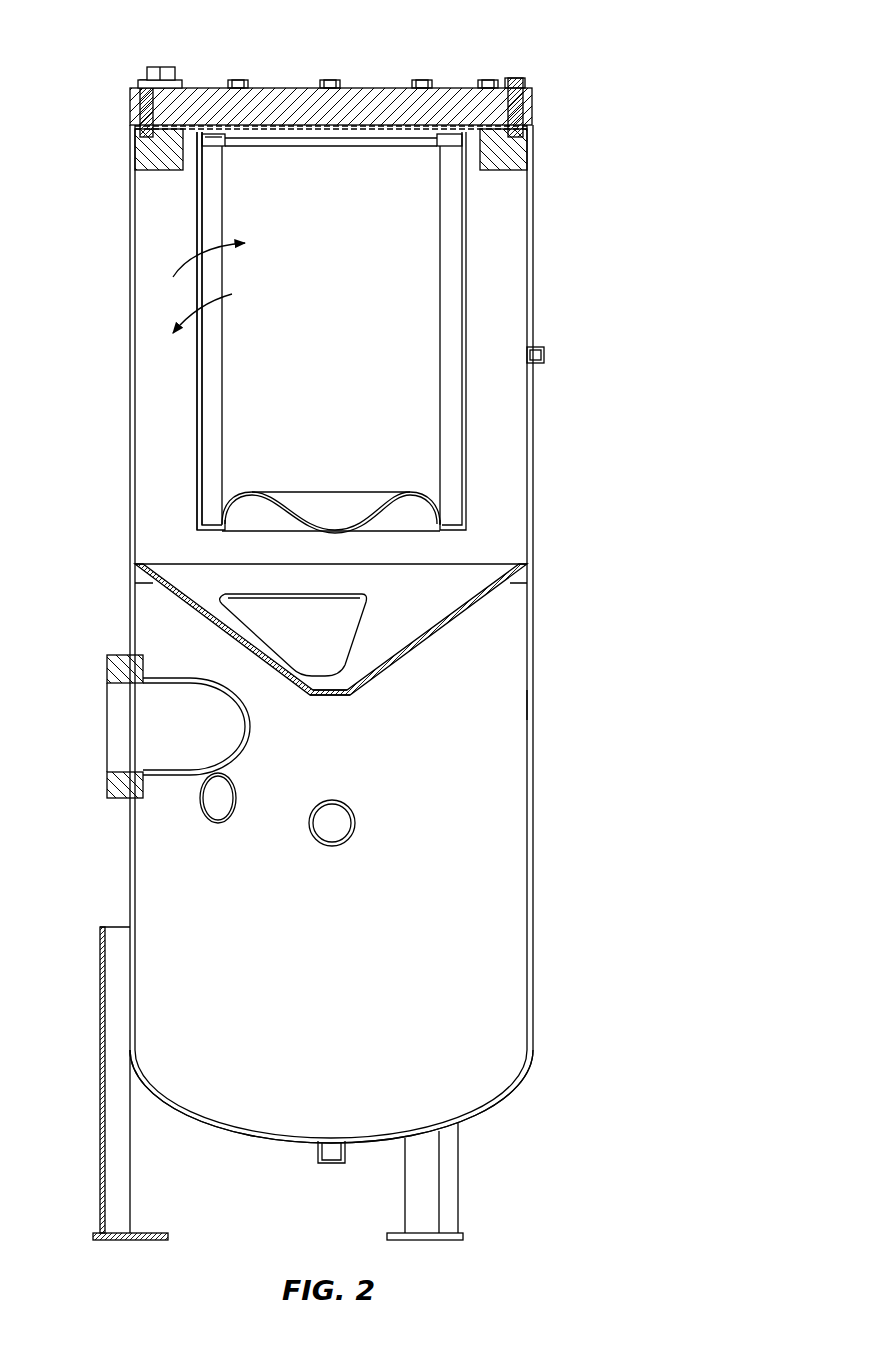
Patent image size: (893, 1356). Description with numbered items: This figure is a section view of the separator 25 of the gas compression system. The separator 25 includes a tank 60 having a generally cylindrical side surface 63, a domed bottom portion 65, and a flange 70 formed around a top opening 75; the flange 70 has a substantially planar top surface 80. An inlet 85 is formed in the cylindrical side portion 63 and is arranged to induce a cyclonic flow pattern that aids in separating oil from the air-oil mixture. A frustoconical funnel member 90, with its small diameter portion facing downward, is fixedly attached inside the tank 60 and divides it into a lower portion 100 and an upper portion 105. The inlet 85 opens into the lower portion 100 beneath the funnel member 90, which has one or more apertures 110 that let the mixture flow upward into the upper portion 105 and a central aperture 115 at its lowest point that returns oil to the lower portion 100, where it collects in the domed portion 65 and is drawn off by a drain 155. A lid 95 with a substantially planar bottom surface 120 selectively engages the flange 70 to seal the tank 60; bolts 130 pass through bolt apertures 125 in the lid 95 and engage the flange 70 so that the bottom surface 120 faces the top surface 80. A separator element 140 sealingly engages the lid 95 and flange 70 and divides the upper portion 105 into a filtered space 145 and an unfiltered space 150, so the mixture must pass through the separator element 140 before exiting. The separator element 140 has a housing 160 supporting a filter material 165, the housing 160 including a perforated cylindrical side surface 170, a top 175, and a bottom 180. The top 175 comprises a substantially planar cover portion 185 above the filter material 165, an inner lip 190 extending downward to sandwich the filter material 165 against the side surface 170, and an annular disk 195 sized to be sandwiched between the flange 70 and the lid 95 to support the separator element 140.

The separator 25 is at (603, 55).
The tank 60 is at (532, 800).
The side surface 63 is at (528, 705).
The domed bottom portion 65 is at (498, 1100).
The flange 70 is at (157, 155).
The top opening 75 is at (210, 128).
The top surface 80 is at (498, 118).
The inlet 85 is at (137, 767).
The funnel member 90 is at (467, 580).
The lid 95 is at (363, 105).
The lower portion 100 is at (212, 918).
The upper portion 105 is at (165, 430).
The apertures 110 is at (340, 628).
The central aperture 115 is at (347, 693).
The bottom surface 120 is at (362, 128).
The bolt apertures 125 is at (140, 105).
The bolts 130 is at (238, 76).
The separator element 140 is at (470, 291).
The filtered space 145 is at (196, 262).
The unfiltered space 150 is at (243, 292).
The drain 155 is at (322, 1152).
The housing 160 is at (455, 538).
The filter material 165 is at (453, 425).
The cylindrical side surface 170 is at (197, 381).
The top 175 is at (467, 127).
The bottom 180 is at (275, 513).
The cover portion 185 is at (214, 136).
The inner lip 190 is at (225, 142).
The disk 195 is at (176, 92).